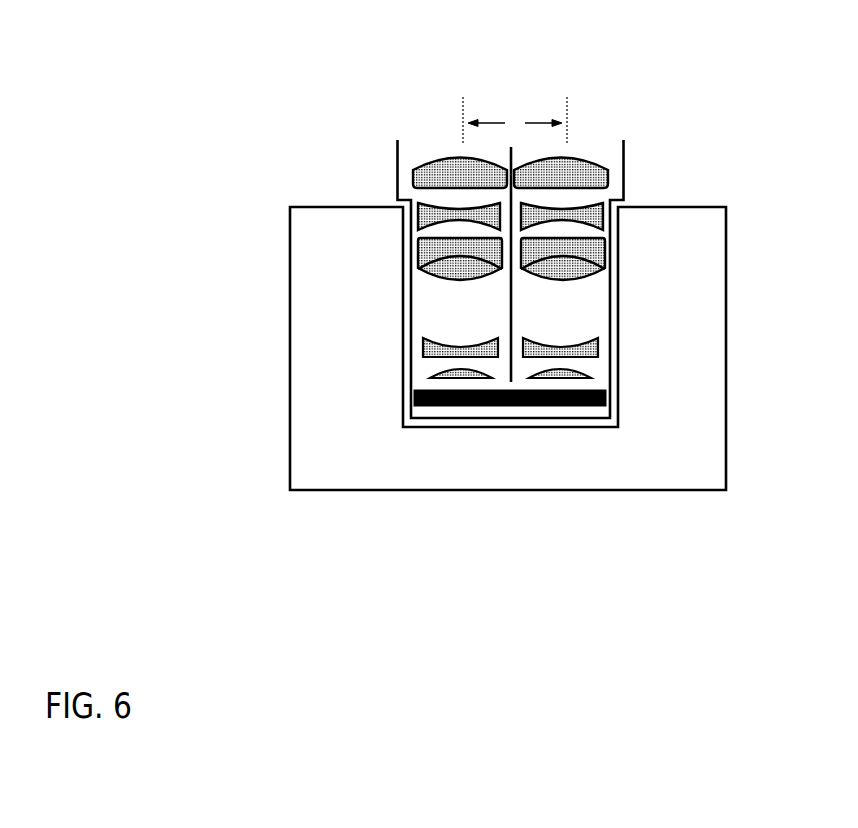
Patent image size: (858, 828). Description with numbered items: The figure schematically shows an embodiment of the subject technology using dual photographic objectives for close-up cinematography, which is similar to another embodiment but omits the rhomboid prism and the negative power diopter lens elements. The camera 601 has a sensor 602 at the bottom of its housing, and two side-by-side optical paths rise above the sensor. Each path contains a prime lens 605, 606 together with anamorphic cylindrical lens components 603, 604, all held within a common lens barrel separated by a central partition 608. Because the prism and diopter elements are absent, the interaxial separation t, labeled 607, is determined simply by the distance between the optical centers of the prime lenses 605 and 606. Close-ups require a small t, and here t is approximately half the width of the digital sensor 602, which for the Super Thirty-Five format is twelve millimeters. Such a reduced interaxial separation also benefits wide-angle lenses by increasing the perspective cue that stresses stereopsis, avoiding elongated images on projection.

The camera 601 is at (418, 500).
The sensor 602 is at (577, 407).
The anamorphic cylindrical lens component 603 is at (418, 369).
The anamorphic cylindrical lens component 604 is at (602, 363).
The prime lens 605 is at (413, 248).
The prime lens 606 is at (602, 228).
The interaxial separation t 607 is at (545, 102).
The partition wall 608 is at (503, 314).